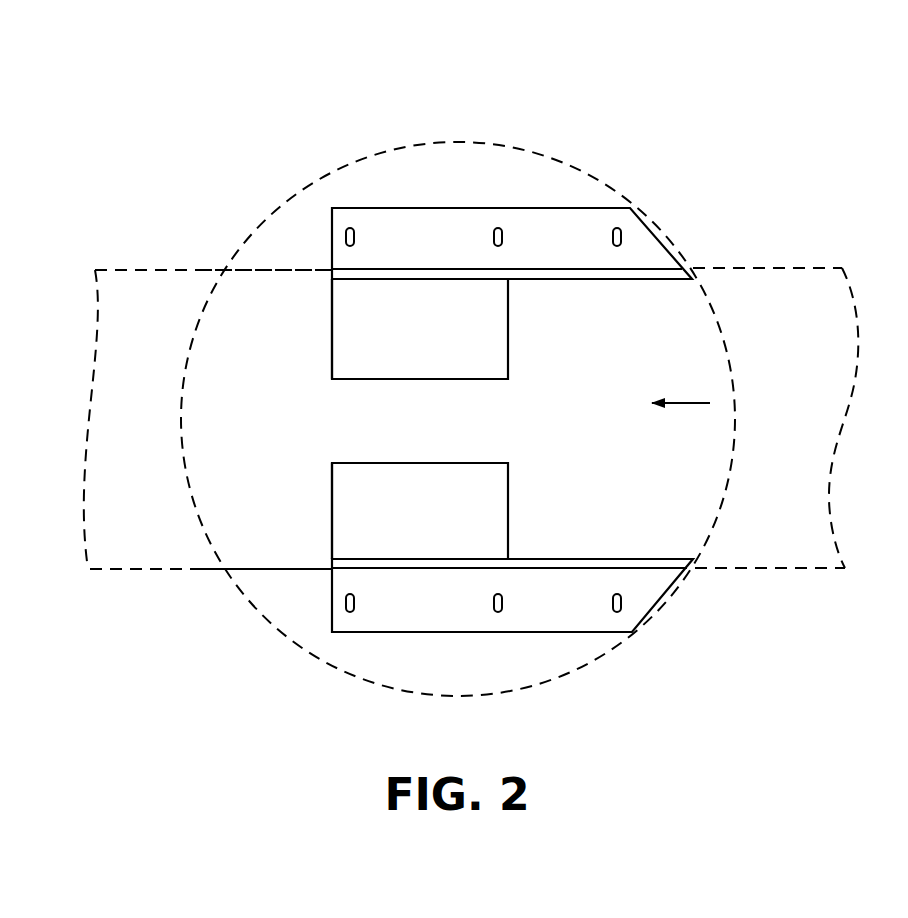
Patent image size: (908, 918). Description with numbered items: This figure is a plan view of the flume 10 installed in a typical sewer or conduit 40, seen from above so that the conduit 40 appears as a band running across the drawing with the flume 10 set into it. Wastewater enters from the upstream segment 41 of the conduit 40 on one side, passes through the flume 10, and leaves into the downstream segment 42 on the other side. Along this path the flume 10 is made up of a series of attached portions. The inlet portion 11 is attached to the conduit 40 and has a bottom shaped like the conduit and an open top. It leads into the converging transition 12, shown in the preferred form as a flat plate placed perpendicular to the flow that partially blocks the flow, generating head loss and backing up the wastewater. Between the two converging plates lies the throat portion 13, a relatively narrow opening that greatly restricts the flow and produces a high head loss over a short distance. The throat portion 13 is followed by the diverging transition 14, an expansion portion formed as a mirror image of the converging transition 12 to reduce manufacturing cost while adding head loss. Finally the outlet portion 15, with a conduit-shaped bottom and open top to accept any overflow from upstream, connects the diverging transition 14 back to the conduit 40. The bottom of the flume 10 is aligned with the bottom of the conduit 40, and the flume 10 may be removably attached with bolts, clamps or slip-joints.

The flume 10 is at (471, 115).
The inlet portion 11 is at (607, 283).
The converging transition 12 is at (512, 330).
The throat portion 13 is at (403, 381).
The diverging transition 14 is at (330, 337).
The outlet portion 15 is at (261, 273).
The conduit 40 is at (841, 264).
The upstream segment 41 is at (766, 509).
The downstream segment 42 is at (146, 439).